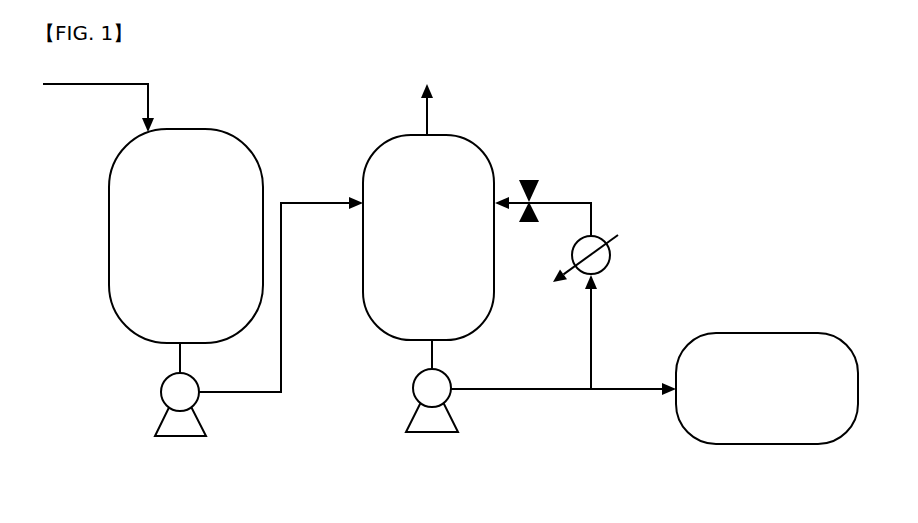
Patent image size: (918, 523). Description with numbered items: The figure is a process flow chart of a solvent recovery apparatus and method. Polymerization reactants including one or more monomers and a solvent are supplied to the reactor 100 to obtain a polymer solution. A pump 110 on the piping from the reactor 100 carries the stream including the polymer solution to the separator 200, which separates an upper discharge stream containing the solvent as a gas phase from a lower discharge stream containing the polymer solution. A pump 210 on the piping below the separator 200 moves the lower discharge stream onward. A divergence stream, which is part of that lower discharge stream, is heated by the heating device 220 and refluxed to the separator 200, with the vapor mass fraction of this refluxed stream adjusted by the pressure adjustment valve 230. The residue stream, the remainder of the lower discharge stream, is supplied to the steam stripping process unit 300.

The reactor 100 is at (186, 236).
The pump 110 is at (161, 392).
The separator 200 is at (428, 212).
The pump 210 is at (413, 388).
The heating device 220 is at (597, 237).
The pressure adjustment valve 230 is at (532, 180).
The steam stripping process unit 300 is at (767, 388).